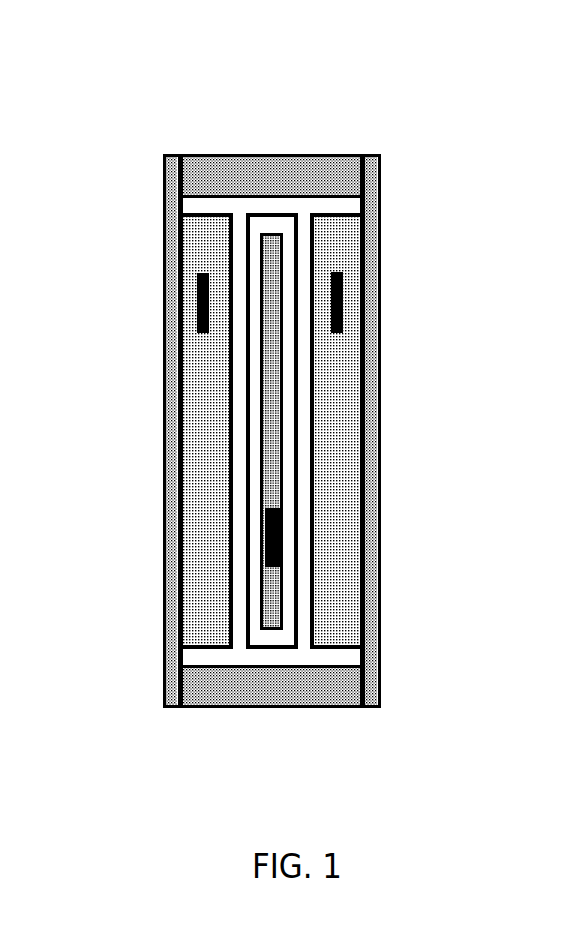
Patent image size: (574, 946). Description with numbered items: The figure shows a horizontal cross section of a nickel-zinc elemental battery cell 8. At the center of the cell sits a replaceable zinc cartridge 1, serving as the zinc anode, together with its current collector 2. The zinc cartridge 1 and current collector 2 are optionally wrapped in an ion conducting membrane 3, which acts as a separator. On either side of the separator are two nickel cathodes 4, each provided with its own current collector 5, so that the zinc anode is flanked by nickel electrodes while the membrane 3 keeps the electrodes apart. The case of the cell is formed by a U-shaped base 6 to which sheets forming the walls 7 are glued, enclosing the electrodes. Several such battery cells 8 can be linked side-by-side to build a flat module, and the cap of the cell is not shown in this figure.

The replaceable zinc cartridge 1 is at (265, 454).
The current collector 2 is at (281, 526).
The ion conducting membrane 3 is at (298, 432).
The nickel cathode 4 is at (202, 368).
The current collector 5 is at (196, 292).
The base 6 is at (267, 178).
The walls 7 is at (368, 230).
The battery cell 8 is at (202, 98).